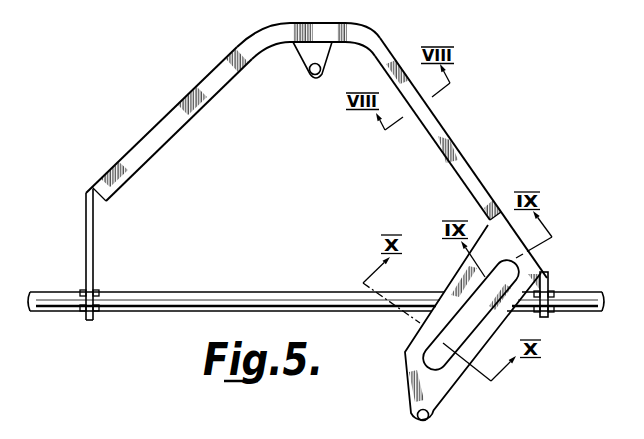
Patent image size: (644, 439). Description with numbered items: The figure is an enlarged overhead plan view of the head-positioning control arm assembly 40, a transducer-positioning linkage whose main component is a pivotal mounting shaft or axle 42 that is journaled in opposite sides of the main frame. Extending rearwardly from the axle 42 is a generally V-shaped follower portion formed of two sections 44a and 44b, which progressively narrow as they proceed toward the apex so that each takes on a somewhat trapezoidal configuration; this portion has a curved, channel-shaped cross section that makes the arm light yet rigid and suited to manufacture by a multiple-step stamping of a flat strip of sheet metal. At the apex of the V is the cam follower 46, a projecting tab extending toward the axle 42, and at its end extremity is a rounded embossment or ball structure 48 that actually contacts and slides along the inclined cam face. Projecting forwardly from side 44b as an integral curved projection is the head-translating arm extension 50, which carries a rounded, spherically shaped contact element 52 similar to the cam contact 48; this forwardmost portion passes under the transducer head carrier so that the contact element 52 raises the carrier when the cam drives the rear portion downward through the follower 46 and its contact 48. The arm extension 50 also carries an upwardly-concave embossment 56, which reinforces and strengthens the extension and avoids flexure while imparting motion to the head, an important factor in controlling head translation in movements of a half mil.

The control arm assembly 40 is at (200, 45).
The pivotal mounting shaft or axle 42 is at (243, 296).
The section of follower portion 44a is at (153, 140).
The side of follower portion 44b is at (448, 146).
The cam follower 46 is at (303, 53).
The rounded embossment or ball structure 48 is at (312, 77).
The head-translating arm extension 50 is at (404, 378).
The contact element 52 is at (429, 415).
The upwardly-concave embossment 56 is at (488, 320).